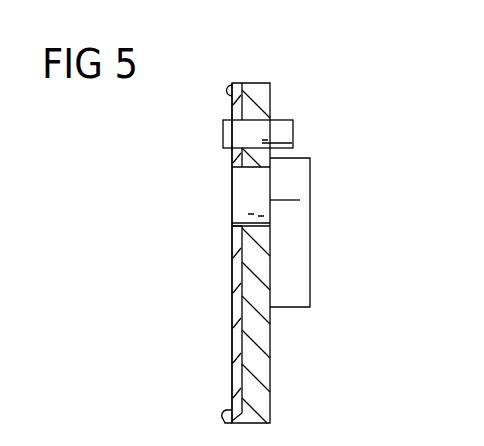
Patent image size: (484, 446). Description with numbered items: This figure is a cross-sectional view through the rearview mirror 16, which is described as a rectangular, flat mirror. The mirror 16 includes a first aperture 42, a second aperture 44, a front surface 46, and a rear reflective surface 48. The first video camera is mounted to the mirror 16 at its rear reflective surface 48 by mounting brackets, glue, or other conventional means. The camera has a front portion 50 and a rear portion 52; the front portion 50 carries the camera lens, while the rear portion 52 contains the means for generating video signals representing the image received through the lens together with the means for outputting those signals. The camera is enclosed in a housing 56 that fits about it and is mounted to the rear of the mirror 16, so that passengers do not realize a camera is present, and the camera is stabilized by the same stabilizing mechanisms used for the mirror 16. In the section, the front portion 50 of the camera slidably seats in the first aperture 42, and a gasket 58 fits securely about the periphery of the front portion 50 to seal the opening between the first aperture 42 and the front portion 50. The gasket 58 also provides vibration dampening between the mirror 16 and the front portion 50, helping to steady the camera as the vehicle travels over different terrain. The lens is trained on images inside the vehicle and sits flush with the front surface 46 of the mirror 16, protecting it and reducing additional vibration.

The rearview mirror 16 is at (266, 76).
The first aperture 42 is at (210, 236).
The second aperture 44 is at (223, 121).
The front surface 46 is at (232, 341).
The rear reflective surface 48 is at (243, 364).
The front portion 50 is at (236, 196).
The rear portion 52 is at (232, 211).
The housing 56 is at (311, 240).
The gasket 58 is at (232, 178).